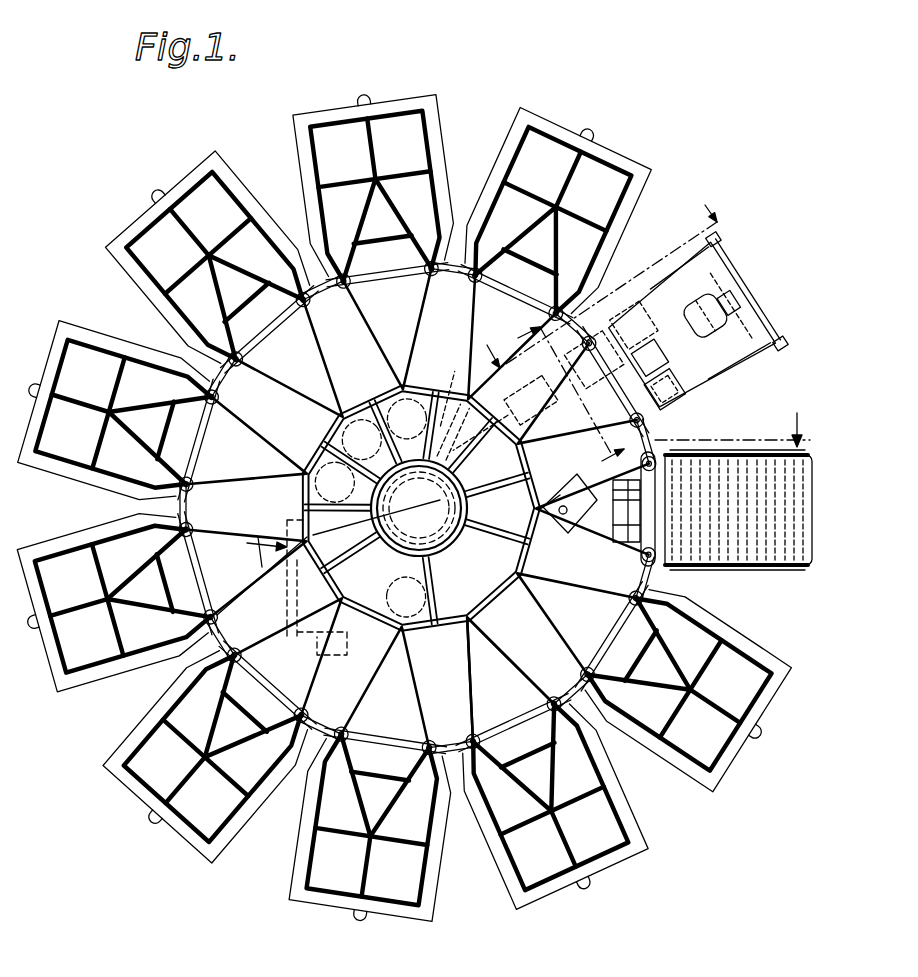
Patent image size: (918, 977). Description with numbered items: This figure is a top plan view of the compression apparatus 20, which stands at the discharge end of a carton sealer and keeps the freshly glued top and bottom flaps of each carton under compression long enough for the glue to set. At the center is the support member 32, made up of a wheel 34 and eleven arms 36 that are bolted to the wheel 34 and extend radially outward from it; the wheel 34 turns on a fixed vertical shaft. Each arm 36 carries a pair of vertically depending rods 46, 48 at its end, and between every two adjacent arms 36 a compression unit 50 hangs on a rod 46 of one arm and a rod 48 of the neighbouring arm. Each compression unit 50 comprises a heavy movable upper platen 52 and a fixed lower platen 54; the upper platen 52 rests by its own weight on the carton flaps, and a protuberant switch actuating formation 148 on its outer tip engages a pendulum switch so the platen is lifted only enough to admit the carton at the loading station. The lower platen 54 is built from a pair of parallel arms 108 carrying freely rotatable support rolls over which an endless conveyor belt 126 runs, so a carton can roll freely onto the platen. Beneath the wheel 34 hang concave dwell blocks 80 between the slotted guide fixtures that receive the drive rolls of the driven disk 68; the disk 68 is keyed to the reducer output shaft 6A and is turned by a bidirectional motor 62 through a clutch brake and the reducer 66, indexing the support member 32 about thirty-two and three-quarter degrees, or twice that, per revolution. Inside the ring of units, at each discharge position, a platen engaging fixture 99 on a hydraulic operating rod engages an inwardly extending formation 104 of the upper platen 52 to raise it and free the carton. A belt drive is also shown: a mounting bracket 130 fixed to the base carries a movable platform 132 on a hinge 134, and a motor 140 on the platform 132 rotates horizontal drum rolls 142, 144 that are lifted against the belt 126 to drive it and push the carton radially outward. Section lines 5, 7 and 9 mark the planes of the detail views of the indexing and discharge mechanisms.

The compression apparatus 20 is at (110, 293).
The support member 32 is at (300, 473).
The wheel 34 is at (332, 410).
The arm 36 is at (376, 346).
The rod 46 is at (236, 380).
The rod 48 is at (312, 311).
The compression unit 50 is at (150, 213).
The upper platen 52 is at (236, 177).
The switch actuating formation 148 is at (163, 195).
The reducer 66 is at (466, 458).
The dwell block 80 is at (312, 456).
The motor 62 is at (285, 633).
The section line 5- 5 is at (521, 491).
The section line 7- 7 is at (603, 286).
The section line 9- 9 is at (567, 392).
The lower platen 54 is at (701, 499).
The parallel arms 108 is at (737, 510).
The conveyor belt 126 is at (737, 510).
The protuberant formation 104 is at (626, 511).
The platen engaging fixture 99 is at (626, 512).
The driven disk 68 is at (566, 536).
The motor 140 is at (619, 362).
The mounting bracket 130 is at (714, 311).
The movable platform 132 is at (732, 306).
The hinge 134 is at (747, 291).
The drum roll 142 is at (670, 320).
The drum roll 144 is at (664, 389).
The arm base member 6A is at (472, 630).